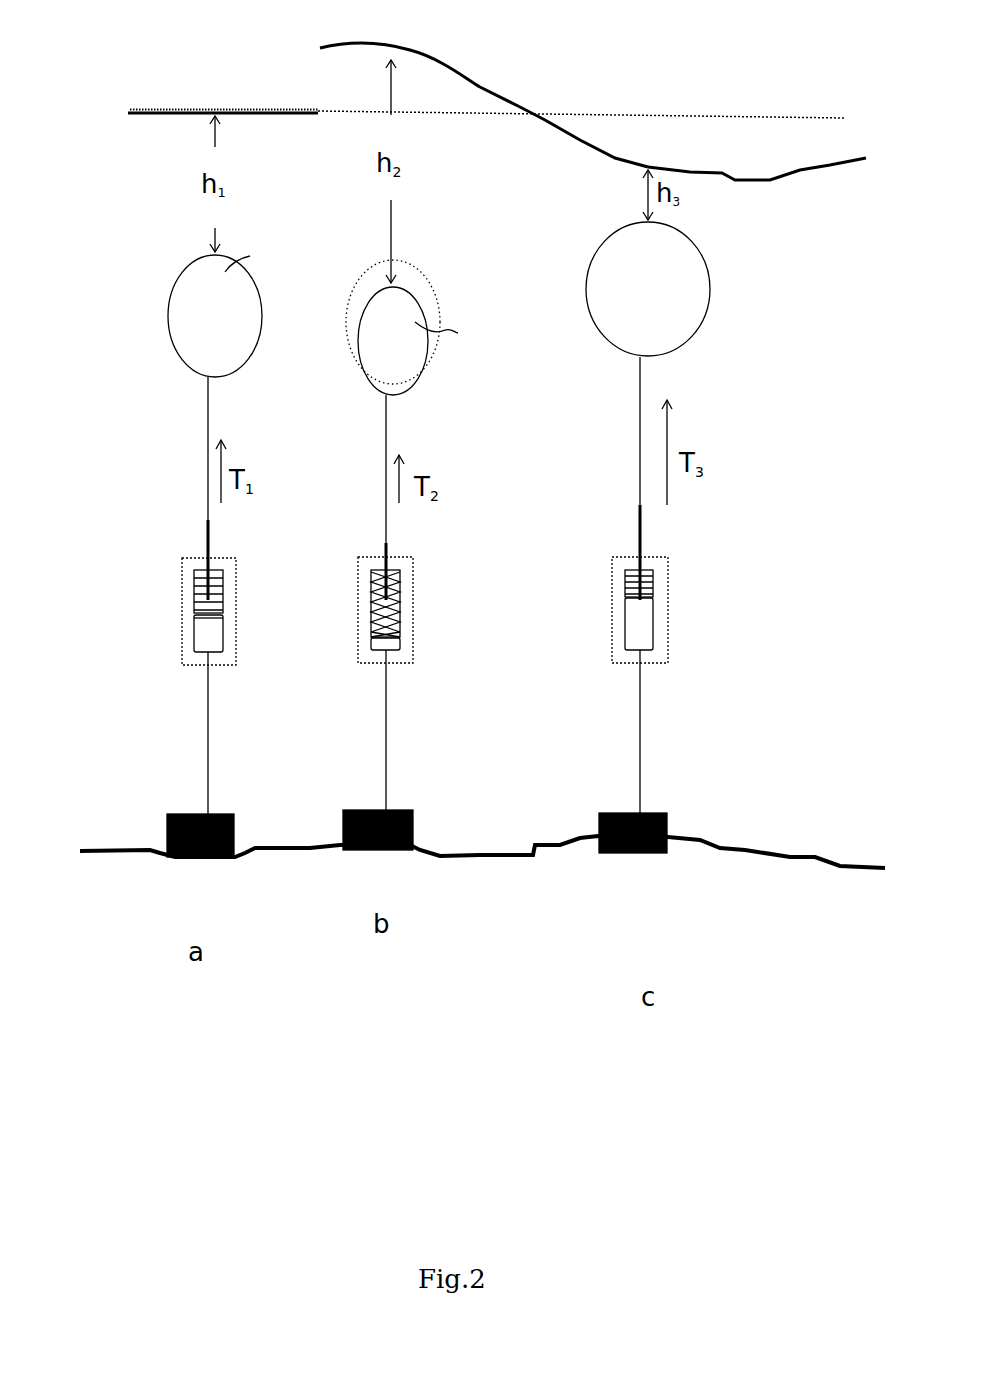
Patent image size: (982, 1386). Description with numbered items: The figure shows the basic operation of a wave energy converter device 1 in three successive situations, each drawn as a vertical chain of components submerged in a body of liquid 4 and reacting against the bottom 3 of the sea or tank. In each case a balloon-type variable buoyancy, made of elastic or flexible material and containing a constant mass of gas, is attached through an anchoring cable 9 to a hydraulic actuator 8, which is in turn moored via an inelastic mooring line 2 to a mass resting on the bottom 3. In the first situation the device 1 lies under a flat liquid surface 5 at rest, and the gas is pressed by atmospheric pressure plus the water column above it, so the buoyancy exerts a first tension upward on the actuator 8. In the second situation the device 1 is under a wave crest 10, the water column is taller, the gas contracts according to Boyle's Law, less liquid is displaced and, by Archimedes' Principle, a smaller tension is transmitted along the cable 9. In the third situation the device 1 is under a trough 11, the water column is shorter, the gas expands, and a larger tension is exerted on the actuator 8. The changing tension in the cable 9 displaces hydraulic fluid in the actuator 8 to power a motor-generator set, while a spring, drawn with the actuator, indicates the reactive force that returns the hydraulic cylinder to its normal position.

The wave energy converter 1 is at (76, 548).
The mooring line 2 is at (208, 748).
The bottom 3 is at (124, 845).
The body of liquid 4 is at (107, 210).
The liquid surface at rest 5 is at (186, 114).
The hydraulic actuator 8 is at (170, 607).
The anchoring cable 9 is at (208, 435).
The wave crest 10 is at (378, 45).
The trough 11 is at (722, 173).